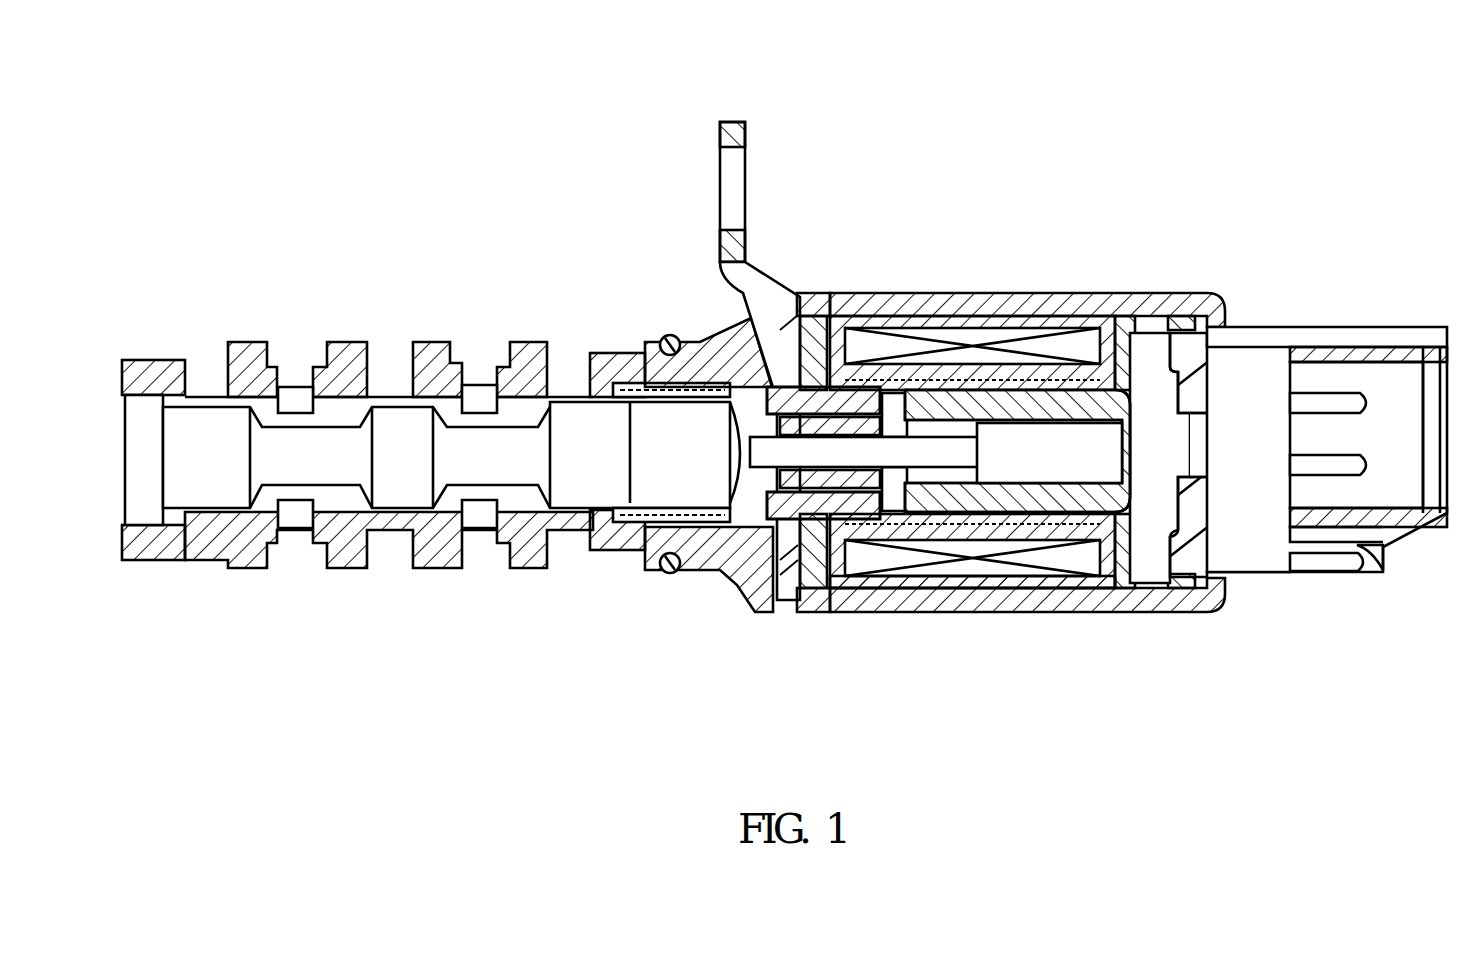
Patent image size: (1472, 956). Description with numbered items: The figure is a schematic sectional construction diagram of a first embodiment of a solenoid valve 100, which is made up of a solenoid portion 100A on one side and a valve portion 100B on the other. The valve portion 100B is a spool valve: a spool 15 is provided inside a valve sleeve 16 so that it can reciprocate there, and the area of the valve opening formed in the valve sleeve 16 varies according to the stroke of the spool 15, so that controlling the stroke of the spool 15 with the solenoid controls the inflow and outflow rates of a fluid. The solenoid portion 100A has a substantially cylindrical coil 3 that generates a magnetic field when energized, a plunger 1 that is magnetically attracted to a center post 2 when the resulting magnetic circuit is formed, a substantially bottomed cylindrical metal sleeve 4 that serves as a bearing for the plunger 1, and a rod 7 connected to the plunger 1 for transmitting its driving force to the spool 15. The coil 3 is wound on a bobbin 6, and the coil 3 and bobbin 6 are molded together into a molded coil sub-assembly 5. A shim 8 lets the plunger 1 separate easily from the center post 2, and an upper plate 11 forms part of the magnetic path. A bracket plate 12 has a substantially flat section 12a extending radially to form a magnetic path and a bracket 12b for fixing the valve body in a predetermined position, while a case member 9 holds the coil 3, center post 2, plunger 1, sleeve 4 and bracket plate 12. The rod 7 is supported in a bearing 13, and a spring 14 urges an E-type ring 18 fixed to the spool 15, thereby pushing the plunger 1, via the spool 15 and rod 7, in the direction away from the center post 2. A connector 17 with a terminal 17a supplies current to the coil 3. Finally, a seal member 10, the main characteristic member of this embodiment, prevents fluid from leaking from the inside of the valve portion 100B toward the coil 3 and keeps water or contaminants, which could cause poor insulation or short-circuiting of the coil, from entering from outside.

The solenoid valve 100 is at (330, 187).
The solenoid portion 100A is at (1007, 185).
The valve portion 100B is at (530, 280).
The plunger 1 is at (997, 605).
The center post 2 is at (852, 330).
The coil 3 is at (1008, 330).
The metal sleeve 4 is at (950, 600).
The molded coil sub-assembly 5 is at (967, 330).
The bobbin 6 is at (1050, 325).
The rod 7 is at (788, 560).
The shim 8 is at (842, 560).
The case member 9 is at (1053, 613).
The seal member 10 is at (810, 300).
The upper plate 11 is at (1162, 585).
The bracket plate 12 is at (778, 265).
The flat section 12a is at (832, 320).
The bracket 12b is at (747, 160).
The bearing 13 is at (723, 560).
The spring 14 is at (623, 560).
The spool 15 is at (218, 410).
The valve sleeve 16 is at (345, 345).
The connector 17 is at (1332, 500).
The terminal 17a is at (1330, 393).
The E-type ring 18 is at (728, 336).